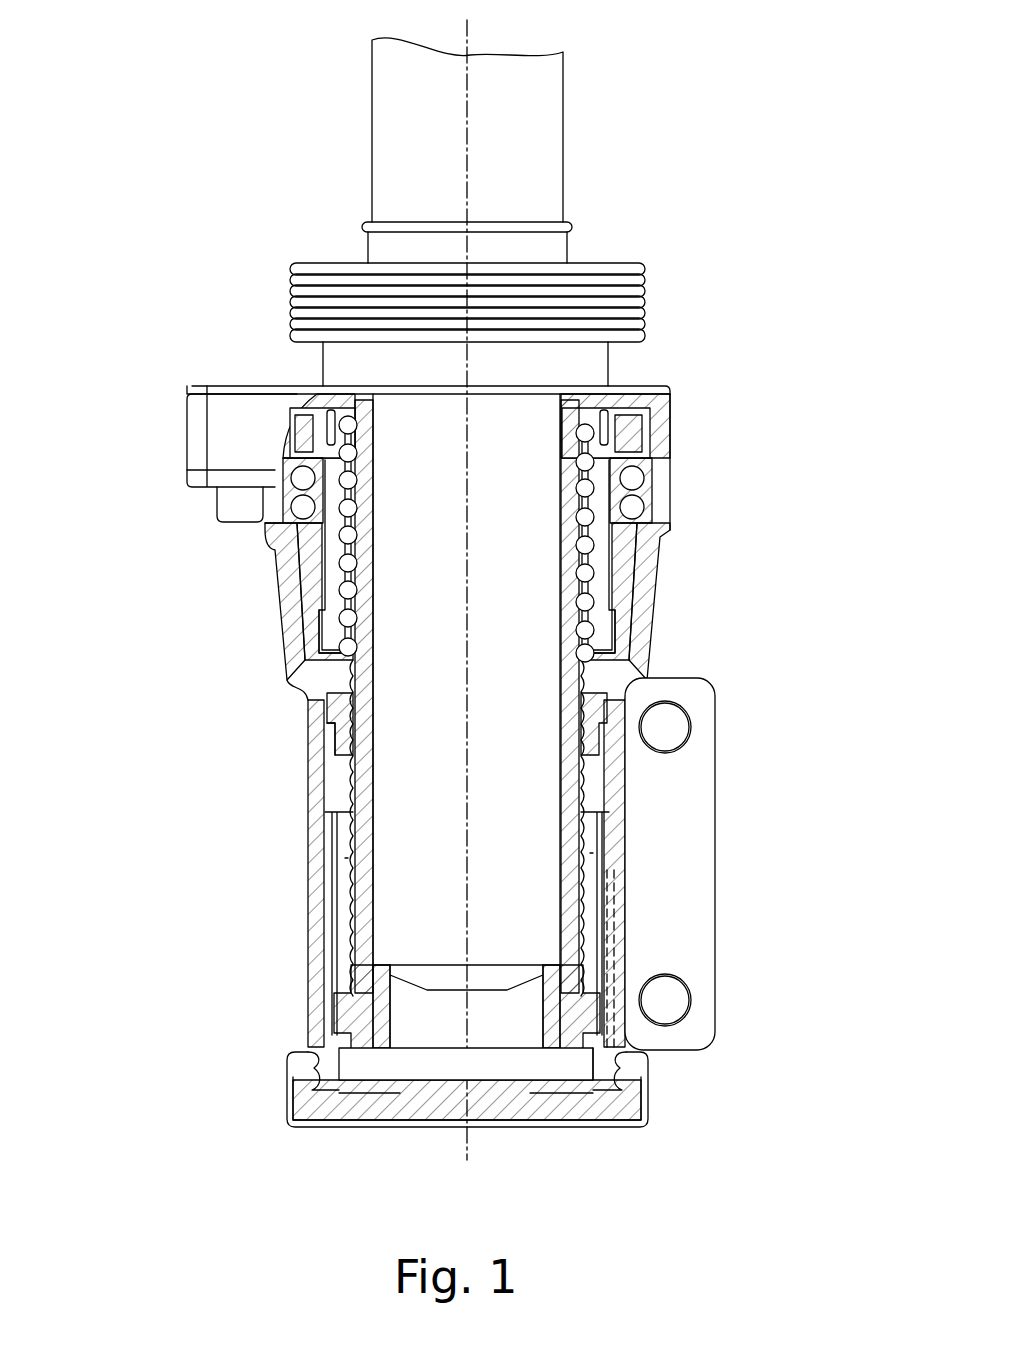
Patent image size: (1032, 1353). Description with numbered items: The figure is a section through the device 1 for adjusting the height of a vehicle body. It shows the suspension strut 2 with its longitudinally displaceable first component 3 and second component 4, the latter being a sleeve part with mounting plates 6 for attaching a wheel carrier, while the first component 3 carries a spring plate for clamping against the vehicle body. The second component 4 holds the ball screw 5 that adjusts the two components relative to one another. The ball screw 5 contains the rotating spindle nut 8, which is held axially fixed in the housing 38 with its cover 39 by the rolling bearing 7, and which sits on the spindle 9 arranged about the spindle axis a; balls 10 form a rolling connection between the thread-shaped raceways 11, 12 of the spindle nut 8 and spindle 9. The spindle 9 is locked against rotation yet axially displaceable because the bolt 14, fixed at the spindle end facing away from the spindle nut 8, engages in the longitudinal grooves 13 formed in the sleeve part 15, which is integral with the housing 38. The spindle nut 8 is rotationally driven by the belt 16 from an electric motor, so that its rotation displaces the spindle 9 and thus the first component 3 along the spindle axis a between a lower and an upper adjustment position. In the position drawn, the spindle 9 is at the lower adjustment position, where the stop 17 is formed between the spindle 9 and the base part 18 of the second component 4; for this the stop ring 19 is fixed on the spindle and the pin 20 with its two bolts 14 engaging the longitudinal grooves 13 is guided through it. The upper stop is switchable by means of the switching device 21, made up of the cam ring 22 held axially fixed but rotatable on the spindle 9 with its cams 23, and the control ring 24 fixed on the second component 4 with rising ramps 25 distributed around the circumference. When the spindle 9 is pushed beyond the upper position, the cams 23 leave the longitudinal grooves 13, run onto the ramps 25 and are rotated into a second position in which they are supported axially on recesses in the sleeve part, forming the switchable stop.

The device 1 is at (750, 68).
The suspension strut 2 is at (648, 230).
The first component 3 is at (545, 81).
The spindle axis a is at (463, 168).
The second component 4 is at (315, 917).
The ball screw 5 is at (624, 558).
The mounting plates 6 is at (697, 770).
The rolling bearing 7 is at (283, 503).
The spindle nut 8 is at (333, 560).
The spindle 9 is at (342, 883).
The balls 10 is at (622, 484).
The raceway 11 is at (340, 797).
The raceway 12 is at (365, 616).
The longitudinal grooves 13 is at (345, 858).
The bolt 14 is at (335, 1052).
The sleeve part 15 is at (613, 930).
The belt 16 is at (642, 423).
The stop 17 is at (300, 1107).
The base part 18 is at (357, 1105).
The stop ring 19 is at (570, 1090).
The pin 20 is at (450, 1065).
The switching device 21 is at (612, 730).
The cam ring 22 is at (597, 1020).
The cams 23 is at (560, 1013).
The control ring 24 is at (342, 703).
The ramps 25 is at (340, 738).
The housing 38 is at (196, 478).
The cover 39 is at (196, 413).